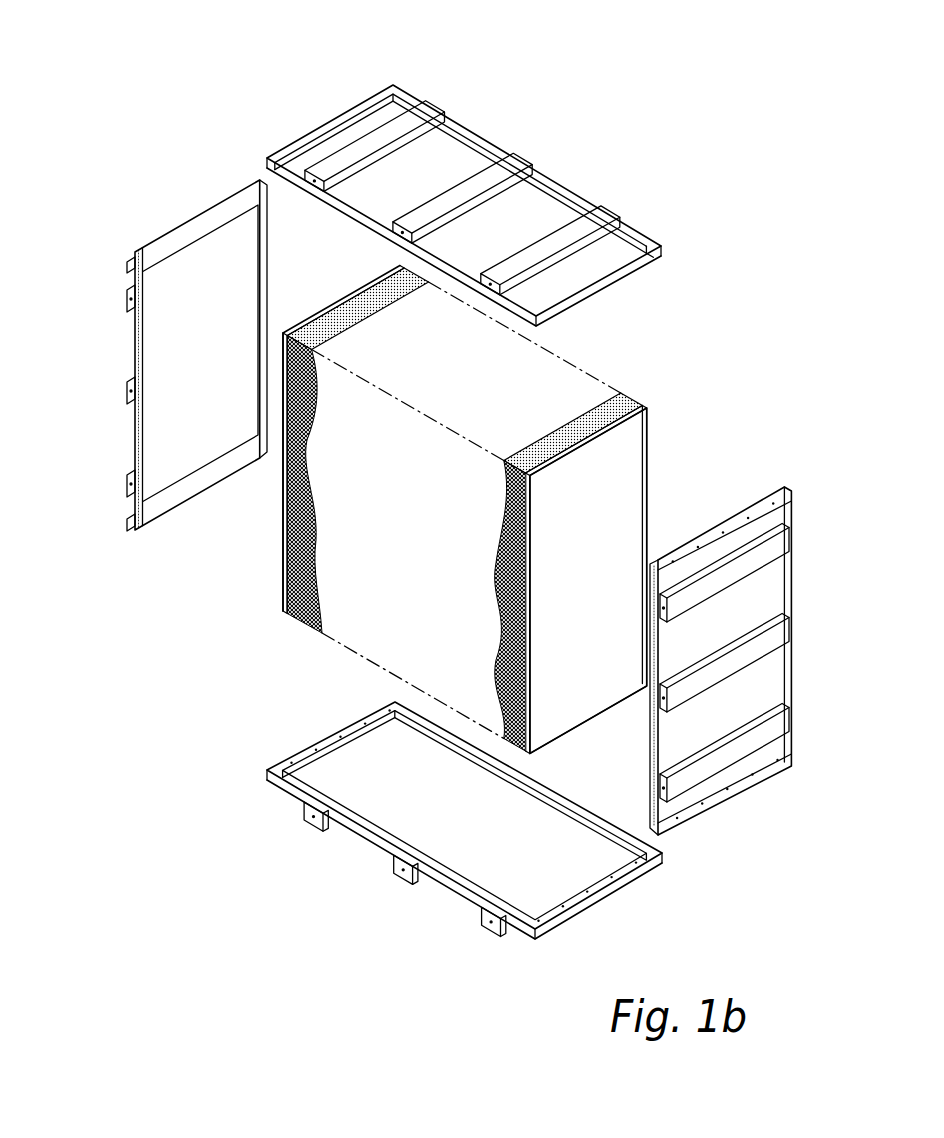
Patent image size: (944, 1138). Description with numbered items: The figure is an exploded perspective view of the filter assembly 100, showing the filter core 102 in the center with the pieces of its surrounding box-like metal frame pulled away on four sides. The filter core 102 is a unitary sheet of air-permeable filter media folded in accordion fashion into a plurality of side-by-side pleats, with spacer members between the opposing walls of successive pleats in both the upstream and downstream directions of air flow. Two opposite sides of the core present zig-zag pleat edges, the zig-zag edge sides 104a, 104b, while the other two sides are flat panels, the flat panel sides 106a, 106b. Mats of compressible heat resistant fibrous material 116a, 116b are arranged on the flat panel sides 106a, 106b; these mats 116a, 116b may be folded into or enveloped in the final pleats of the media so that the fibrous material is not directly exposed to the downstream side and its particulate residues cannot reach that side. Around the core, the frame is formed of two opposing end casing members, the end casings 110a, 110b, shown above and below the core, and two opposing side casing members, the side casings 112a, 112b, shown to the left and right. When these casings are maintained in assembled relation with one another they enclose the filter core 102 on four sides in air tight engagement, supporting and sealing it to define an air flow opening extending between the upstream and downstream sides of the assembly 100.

The filter assembly 100 is at (170, 91).
The filter core 102 is at (313, 632).
The zig-zag edge side 104a is at (350, 660).
The zig-zag edge side 104b is at (580, 422).
The flat panel side 106a is at (283, 553).
The flat panel side 106b is at (600, 433).
The end casing 110a is at (357, 840).
The end casing 110b is at (480, 132).
The side casing 112a is at (135, 335).
The side casing 112b is at (787, 584).
The mat of compressible heat resistant fibrous material 116a is at (283, 512).
The mat of compressible heat resistant fibrous material 116b is at (545, 727).